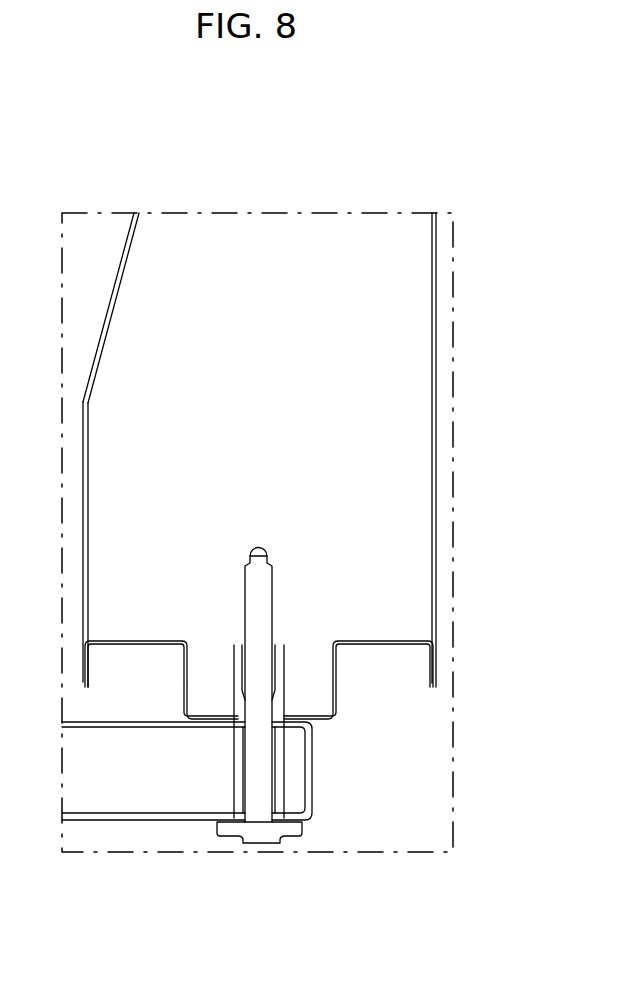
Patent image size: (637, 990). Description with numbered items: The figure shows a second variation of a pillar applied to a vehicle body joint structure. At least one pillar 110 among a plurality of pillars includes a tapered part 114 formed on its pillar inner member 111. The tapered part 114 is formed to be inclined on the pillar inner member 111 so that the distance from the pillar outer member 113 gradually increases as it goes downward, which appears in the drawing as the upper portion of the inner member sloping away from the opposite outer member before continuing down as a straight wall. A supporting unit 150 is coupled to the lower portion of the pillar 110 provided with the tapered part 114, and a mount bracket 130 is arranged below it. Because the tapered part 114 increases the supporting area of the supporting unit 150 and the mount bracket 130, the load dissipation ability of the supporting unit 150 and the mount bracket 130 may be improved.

The pillar 110 is at (268, 450).
The pillar inner member 111 is at (85, 444).
The pillar outer member 113 is at (435, 465).
The tapered part 114 is at (97, 352).
The mount bracket 130 is at (164, 836).
The supporting unit 150 is at (355, 705).